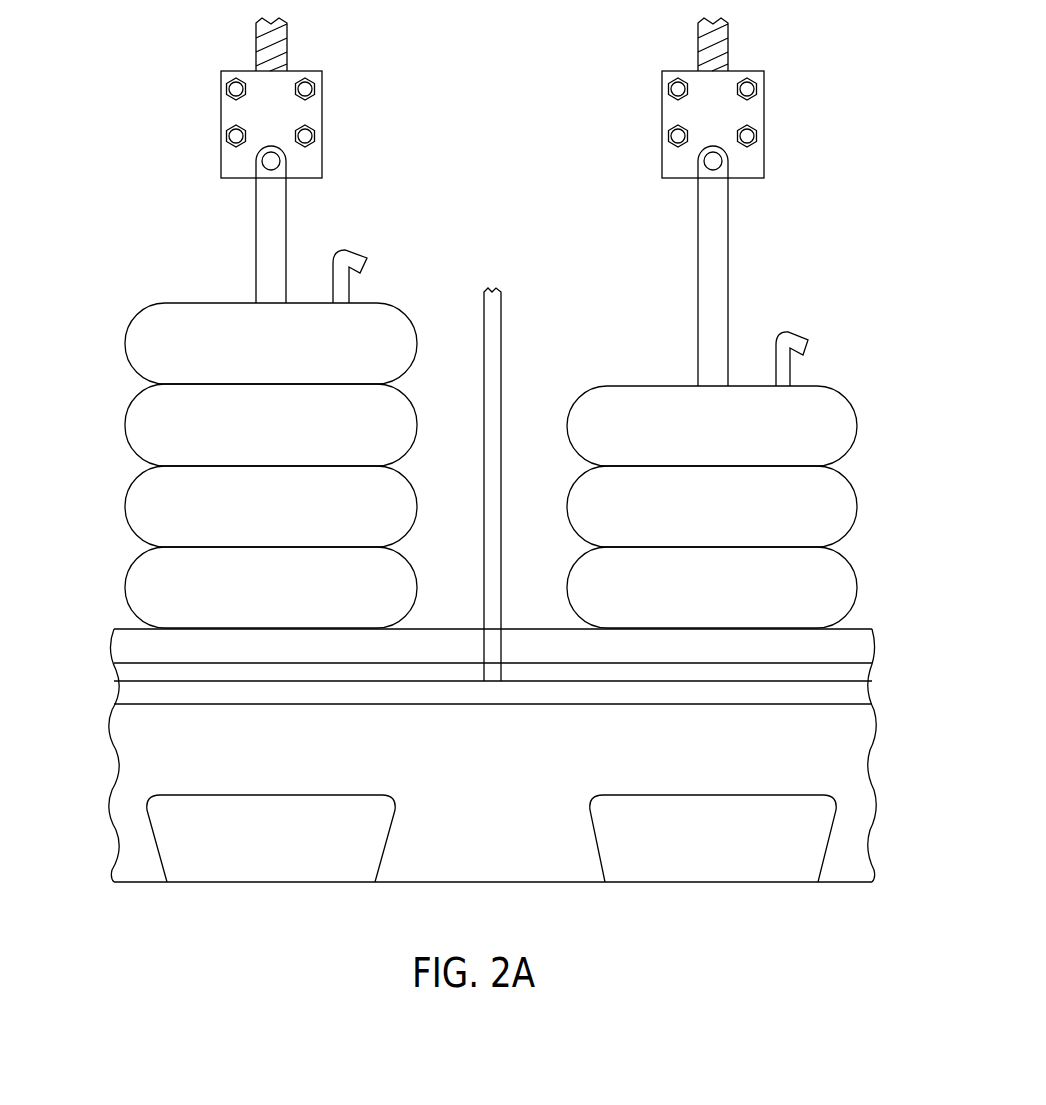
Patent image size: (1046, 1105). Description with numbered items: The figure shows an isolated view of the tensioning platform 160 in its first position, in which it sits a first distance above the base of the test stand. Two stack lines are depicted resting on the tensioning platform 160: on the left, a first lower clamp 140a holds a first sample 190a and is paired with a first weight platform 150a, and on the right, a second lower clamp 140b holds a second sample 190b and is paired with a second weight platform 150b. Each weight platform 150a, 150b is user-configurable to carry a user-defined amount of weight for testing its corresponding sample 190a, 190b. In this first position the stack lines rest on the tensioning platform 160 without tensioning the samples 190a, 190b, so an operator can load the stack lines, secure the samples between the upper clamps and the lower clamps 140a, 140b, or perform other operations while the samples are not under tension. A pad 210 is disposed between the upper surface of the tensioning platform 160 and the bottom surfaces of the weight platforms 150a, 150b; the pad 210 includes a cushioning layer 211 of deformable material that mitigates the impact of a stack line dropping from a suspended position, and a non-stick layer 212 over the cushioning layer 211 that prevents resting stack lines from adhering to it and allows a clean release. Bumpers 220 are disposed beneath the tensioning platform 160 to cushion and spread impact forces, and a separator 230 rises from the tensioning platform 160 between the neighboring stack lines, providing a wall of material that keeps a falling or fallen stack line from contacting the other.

The first sample 190a is at (288, 43).
The second sample 190b is at (696, 38).
The first lower clamp 140a is at (322, 115).
The second lower clamp 140b is at (662, 110).
The first weight platform 150a is at (282, 604).
The second weight platform 150b is at (741, 604).
The separator 230 is at (494, 309).
The pad 210 is at (461, 750).
The non-stick layer 212 is at (312, 657).
The cushioning layer 211 is at (189, 675).
The tensioning platform 160 is at (453, 695).
The bumper 220 is at (288, 852).